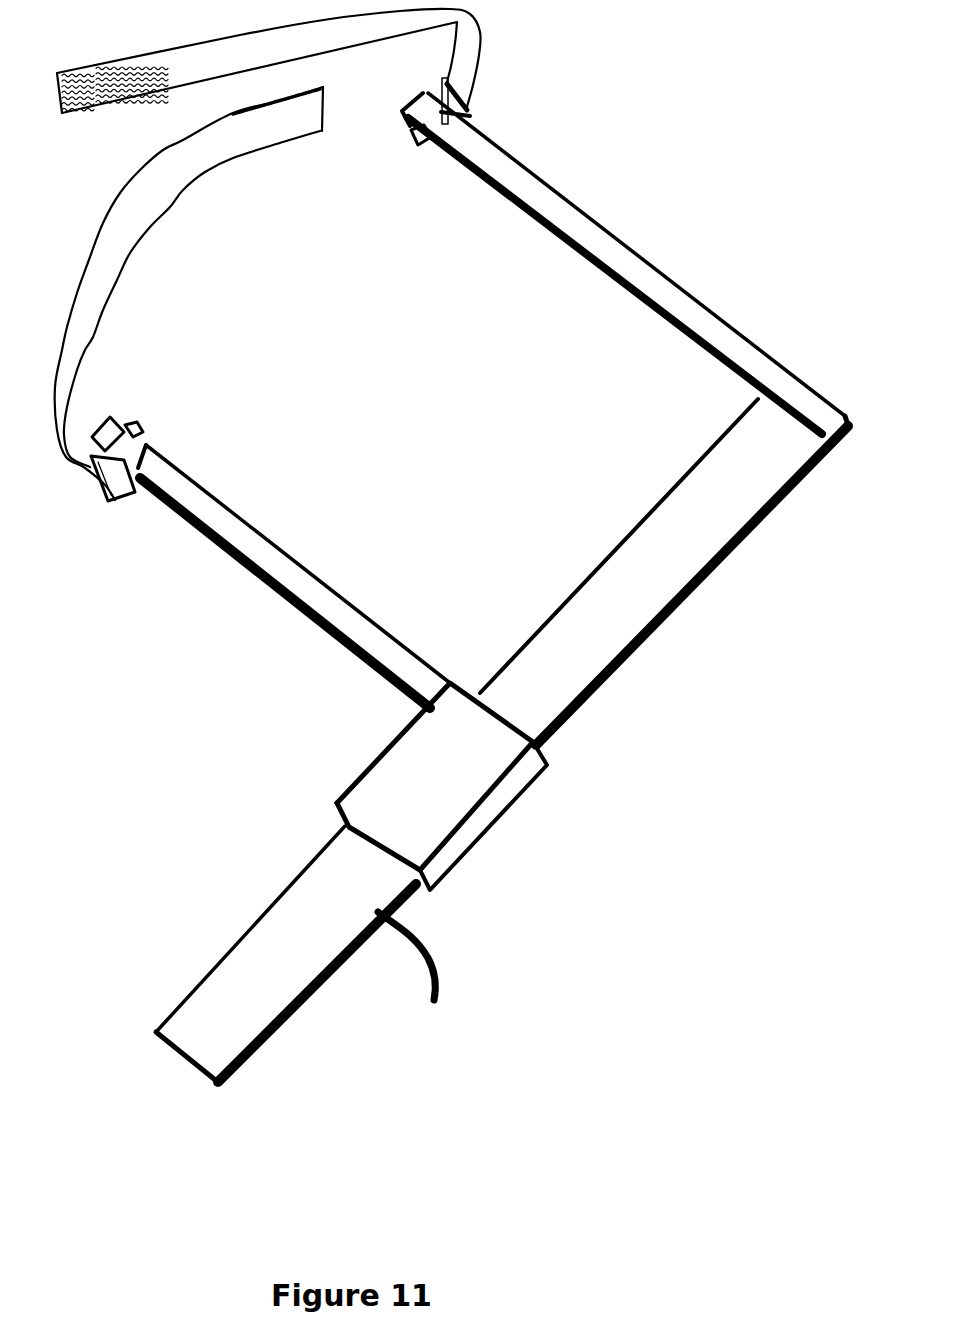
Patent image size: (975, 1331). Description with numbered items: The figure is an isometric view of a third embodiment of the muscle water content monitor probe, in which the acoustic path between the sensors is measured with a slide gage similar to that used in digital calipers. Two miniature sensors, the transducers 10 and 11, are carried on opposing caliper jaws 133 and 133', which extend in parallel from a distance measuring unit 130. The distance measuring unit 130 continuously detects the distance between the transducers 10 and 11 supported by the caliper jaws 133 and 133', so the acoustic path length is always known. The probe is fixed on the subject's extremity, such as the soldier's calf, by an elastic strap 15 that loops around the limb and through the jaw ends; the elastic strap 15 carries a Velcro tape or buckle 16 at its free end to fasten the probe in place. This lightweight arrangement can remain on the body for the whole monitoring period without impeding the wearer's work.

The miniature sensor 10 is at (145, 443).
The miniature sensor 11 is at (413, 148).
The elastic strap 15 is at (143, 193).
The buckle 16 is at (102, 82).
The distance measuring unit 130 is at (445, 778).
The caliper jaw 133 is at (294, 581).
The caliper jaw 133' is at (502, 588).